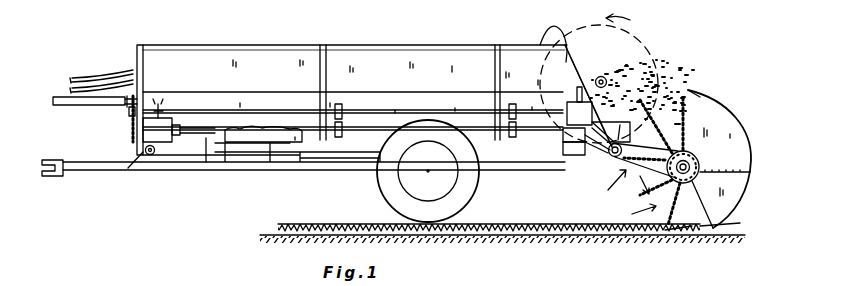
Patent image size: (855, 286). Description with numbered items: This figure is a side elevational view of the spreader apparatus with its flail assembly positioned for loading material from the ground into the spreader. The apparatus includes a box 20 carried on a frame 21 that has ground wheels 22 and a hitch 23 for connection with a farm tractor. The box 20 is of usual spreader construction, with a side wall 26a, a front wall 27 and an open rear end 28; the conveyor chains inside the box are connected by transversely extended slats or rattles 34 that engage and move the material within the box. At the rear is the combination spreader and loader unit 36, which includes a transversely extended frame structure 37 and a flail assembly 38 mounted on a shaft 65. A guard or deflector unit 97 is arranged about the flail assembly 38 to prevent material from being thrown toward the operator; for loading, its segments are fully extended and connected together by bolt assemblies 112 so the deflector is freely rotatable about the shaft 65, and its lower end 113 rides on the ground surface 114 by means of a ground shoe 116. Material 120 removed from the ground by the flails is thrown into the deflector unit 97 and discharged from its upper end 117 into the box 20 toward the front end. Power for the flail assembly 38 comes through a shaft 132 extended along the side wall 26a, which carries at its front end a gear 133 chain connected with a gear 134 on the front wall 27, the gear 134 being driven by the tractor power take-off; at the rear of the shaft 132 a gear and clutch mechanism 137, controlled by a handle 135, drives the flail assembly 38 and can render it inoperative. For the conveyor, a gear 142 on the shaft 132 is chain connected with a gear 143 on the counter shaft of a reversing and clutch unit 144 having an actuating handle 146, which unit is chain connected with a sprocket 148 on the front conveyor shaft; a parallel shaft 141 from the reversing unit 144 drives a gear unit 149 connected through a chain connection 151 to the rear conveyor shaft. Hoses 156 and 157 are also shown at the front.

The box 20 is at (353, 39).
The frame 21 is at (353, 174).
The ground wheels 22 is at (478, 171).
The hitch 23 is at (52, 178).
The side wall 26a is at (235, 56).
The front wall 27 is at (138, 52).
The open rear end 28 is at (565, 38).
The slats or rattles 34 is at (268, 160).
The combination spreader and loader unit 36 is at (741, 112).
The frame structure 37 is at (622, 186).
The flail assembly 38 is at (631, 213).
The shaft 65 is at (606, 80).
The guard or deflector unit 97 is at (766, 168).
The bolt assemblies 112 is at (717, 173).
The lower end 113 is at (722, 214).
The ground surface 114 is at (670, 227).
The ground shoe 116 is at (720, 225).
The upper end 117 is at (697, 138).
The material 120 is at (297, 228).
The shaft 132 is at (385, 112).
The gear 133 is at (130, 114).
The gear 134 is at (143, 93).
The handle 135 is at (577, 88).
The gear and clutch mechanism 137 is at (568, 113).
The shaft 141 is at (210, 140).
The gear 142 is at (135, 126).
The gear 143 is at (138, 147).
The reversing and clutch unit 144 is at (160, 140).
The actuating handle 146 is at (164, 112).
The sprocket 148 is at (143, 160).
The gear unit 149 is at (584, 163).
The chain connection 151 is at (631, 162).
The hose 156 is at (80, 88).
The hose 157 is at (95, 77).